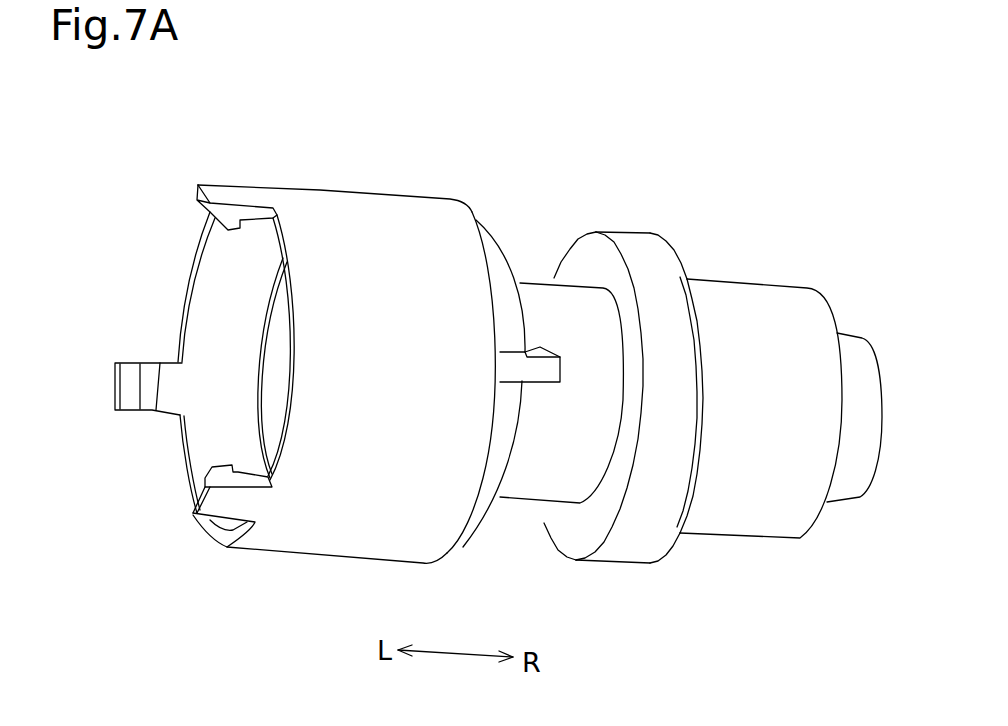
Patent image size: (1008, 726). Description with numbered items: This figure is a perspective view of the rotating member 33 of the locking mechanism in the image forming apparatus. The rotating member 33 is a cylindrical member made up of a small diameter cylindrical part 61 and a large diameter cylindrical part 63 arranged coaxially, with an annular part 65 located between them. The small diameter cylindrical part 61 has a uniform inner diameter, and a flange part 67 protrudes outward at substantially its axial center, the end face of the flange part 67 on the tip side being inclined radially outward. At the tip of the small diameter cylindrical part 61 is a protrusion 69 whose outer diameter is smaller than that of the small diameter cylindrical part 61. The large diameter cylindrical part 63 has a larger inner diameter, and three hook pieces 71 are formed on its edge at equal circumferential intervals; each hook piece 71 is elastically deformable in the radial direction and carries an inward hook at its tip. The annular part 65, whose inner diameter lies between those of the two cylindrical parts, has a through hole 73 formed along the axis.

The rotating member 33 is at (574, 165).
The small diameter cylindrical part 61 is at (755, 317).
The large diameter cylindrical part 63 is at (380, 252).
The annular part 65 is at (508, 285).
The flange part 67 is at (643, 527).
The protrusion 69 is at (860, 360).
The hook pieces 71 is at (233, 198).
The through hole 73 is at (540, 385).